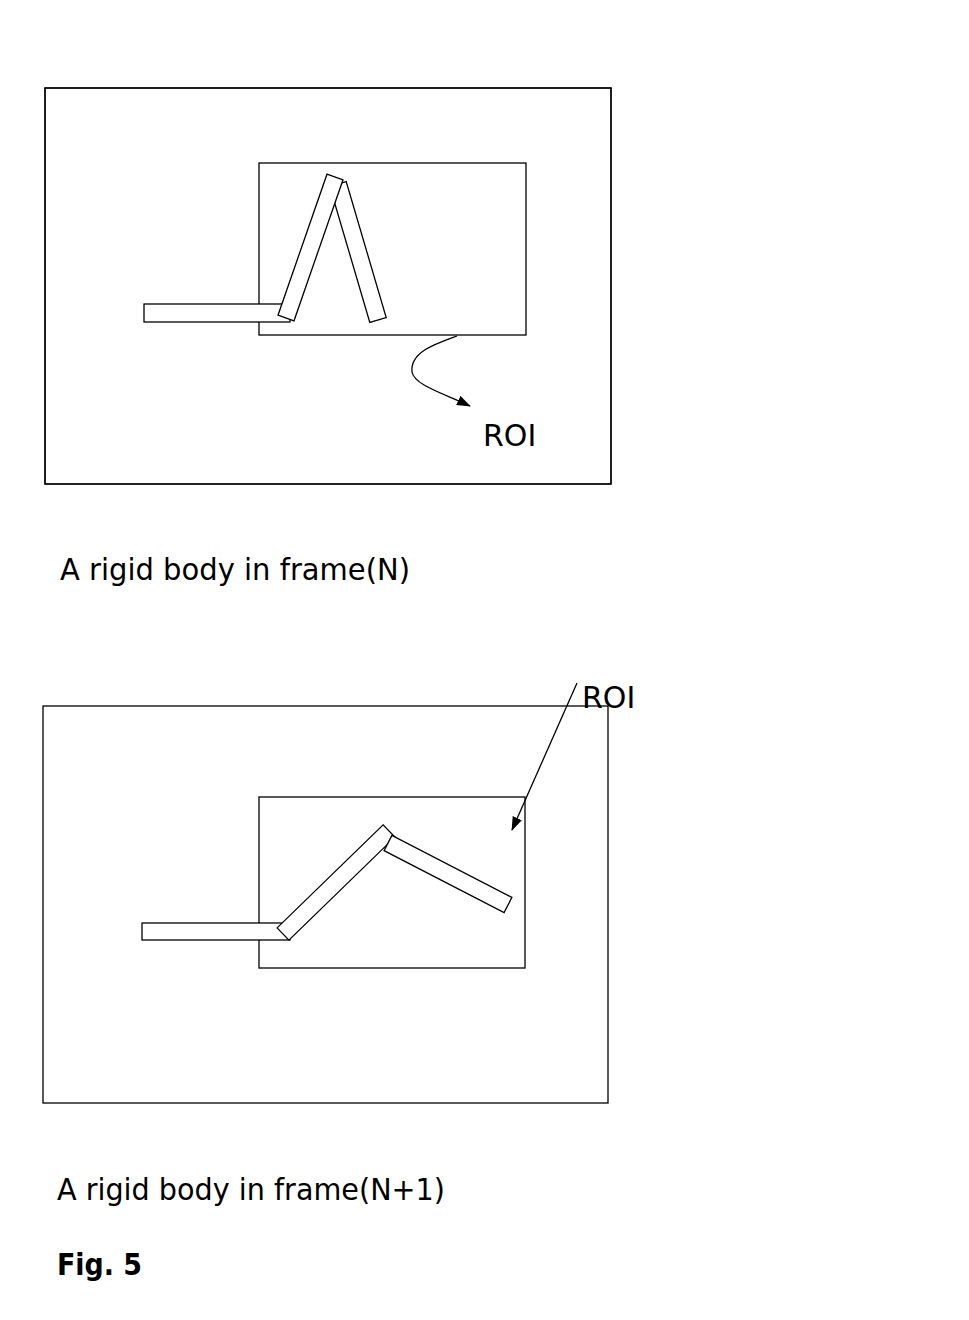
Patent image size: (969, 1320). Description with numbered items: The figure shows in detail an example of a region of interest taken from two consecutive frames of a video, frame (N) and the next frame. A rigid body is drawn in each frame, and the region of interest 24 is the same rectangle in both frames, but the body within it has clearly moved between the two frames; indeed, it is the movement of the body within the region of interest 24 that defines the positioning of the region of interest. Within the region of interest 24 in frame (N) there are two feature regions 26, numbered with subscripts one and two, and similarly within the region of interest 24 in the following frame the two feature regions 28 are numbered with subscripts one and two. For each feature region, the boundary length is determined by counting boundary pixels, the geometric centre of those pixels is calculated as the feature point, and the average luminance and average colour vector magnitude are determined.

The region of interest 24 is at (530, 240).
The feature regions 26 is at (513, 40).
The feature regions 28 is at (432, 770).